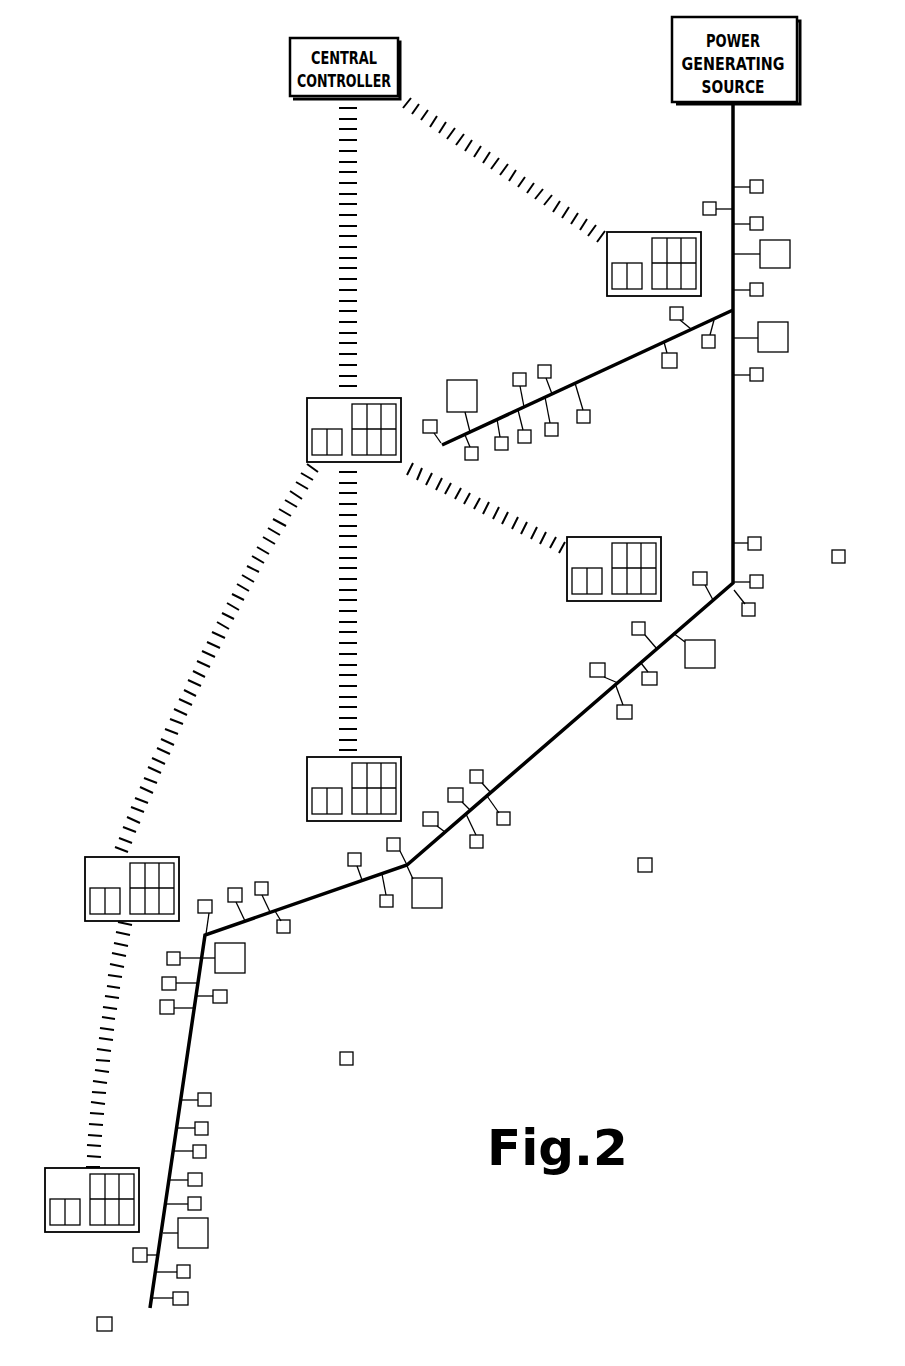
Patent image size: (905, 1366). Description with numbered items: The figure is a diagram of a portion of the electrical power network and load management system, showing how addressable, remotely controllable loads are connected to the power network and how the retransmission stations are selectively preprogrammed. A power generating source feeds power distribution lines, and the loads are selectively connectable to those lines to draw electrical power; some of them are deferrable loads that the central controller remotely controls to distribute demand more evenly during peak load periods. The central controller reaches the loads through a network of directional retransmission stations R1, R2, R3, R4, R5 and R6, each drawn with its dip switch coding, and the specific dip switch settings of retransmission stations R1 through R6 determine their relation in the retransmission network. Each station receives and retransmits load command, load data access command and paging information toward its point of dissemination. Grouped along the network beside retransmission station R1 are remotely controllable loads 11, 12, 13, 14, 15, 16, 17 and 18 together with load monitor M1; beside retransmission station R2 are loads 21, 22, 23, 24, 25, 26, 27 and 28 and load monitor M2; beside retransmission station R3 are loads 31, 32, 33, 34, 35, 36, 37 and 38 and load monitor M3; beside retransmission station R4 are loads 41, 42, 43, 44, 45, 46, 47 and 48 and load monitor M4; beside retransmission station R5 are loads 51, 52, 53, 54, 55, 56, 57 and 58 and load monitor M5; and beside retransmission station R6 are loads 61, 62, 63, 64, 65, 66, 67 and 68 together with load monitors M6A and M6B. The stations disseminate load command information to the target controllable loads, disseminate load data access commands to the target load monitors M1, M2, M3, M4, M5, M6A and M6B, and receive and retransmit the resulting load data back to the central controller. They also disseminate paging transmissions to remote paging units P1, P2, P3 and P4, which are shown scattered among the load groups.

The retransmission station R1 is at (310, 399).
The retransmission station R2 is at (177, 857).
The retransmission station R3 is at (137, 1170).
The retransmission station R4 is at (398, 757).
The retransmission station R5 is at (662, 537).
The retransmission station R6 is at (607, 271).
The load monitor M1 is at (461, 380).
The load monitor M2 is at (245, 955).
The load monitor M3 is at (208, 1243).
The load monitor M4 is at (442, 900).
The load monitor M5 is at (715, 665).
The load monitor M6A is at (790, 248).
The load monitor M6B is at (788, 333).
The remote paging unit P1 is at (104, 1317).
The remote paging unit P2 is at (353, 1060).
The remote paging unit P3 is at (652, 865).
The remote paging unit P4 is at (845, 556).
The remotely controllable load 11 is at (475, 460).
The remotely controllable load 12 is at (435, 420).
The remotely controllable load 13 is at (504, 450).
The remotely controllable load 14 is at (527, 443).
The remotely controllable load 15 is at (552, 436).
The remotely controllable load 16 is at (587, 423).
The remotely controllable load 17 is at (513, 373).
The remotely controllable load 18 is at (545, 365).
The remotely controllable load 21 is at (290, 927).
The remotely controllable load 22 is at (269, 875).
The remotely controllable load 23 is at (236, 888).
The remotely controllable load 24 is at (206, 900).
The remotely controllable load 25 is at (170, 952).
The remotely controllable load 26 is at (162, 983).
The remotely controllable load 27 is at (163, 1014).
The remotely controllable load 28 is at (227, 999).
The remotely controllable load 31 is at (211, 1100).
The remotely controllable load 32 is at (208, 1128).
The remotely controllable load 33 is at (206, 1151).
The remotely controllable load 34 is at (202, 1180).
The remotely controllable load 35 is at (201, 1204).
The remotely controllable load 36 is at (134, 1258).
The remotely controllable load 37 is at (190, 1272).
The remotely controllable load 38 is at (188, 1300).
The remotely controllable load 41 is at (483, 770).
The remotely controllable load 42 is at (452, 789).
The remotely controllable load 43 is at (430, 813).
The remotely controllable load 44 is at (387, 844).
The remotely controllable load 45 is at (348, 864).
The remotely controllable load 46 is at (386, 907).
The remotely controllable load 47 is at (477, 848).
The remotely controllable load 48 is at (510, 819).
The remotely controllable load 51 is at (761, 543).
The remotely controllable load 52 is at (710, 562).
The remotely controllable load 53 is at (633, 635).
The remotely controllable load 54 is at (653, 685).
The remotely controllable load 55 is at (763, 582).
The remotely controllable load 56 is at (755, 612).
The remotely controllable load 57 is at (590, 671).
The remotely controllable load 58 is at (628, 719).
The remotely controllable load 61 is at (763, 187).
The remotely controllable load 62 is at (710, 203).
The remotely controllable load 63 is at (763, 224).
The remotely controllable load 64 is at (763, 290).
The remotely controllable load 65 is at (670, 314).
The remotely controllable load 66 is at (708, 348).
The remotely controllable load 67 is at (763, 375).
The remotely controllable load 68 is at (670, 368).